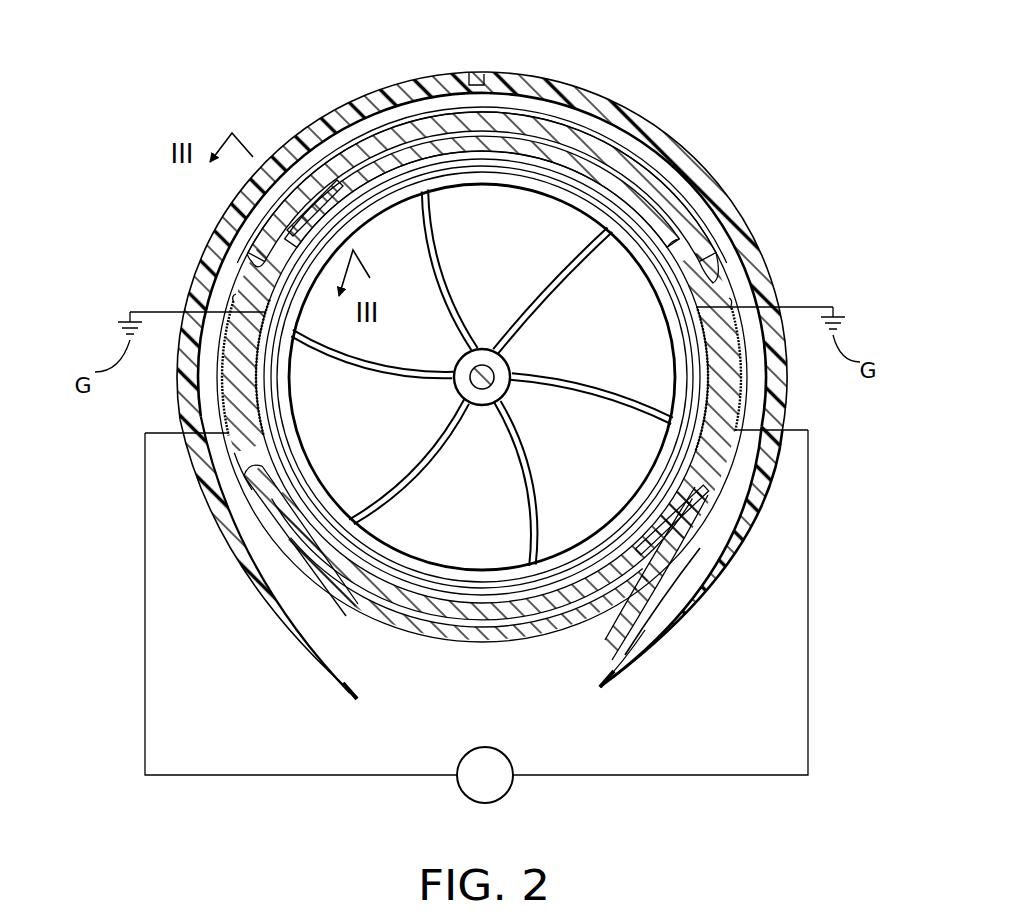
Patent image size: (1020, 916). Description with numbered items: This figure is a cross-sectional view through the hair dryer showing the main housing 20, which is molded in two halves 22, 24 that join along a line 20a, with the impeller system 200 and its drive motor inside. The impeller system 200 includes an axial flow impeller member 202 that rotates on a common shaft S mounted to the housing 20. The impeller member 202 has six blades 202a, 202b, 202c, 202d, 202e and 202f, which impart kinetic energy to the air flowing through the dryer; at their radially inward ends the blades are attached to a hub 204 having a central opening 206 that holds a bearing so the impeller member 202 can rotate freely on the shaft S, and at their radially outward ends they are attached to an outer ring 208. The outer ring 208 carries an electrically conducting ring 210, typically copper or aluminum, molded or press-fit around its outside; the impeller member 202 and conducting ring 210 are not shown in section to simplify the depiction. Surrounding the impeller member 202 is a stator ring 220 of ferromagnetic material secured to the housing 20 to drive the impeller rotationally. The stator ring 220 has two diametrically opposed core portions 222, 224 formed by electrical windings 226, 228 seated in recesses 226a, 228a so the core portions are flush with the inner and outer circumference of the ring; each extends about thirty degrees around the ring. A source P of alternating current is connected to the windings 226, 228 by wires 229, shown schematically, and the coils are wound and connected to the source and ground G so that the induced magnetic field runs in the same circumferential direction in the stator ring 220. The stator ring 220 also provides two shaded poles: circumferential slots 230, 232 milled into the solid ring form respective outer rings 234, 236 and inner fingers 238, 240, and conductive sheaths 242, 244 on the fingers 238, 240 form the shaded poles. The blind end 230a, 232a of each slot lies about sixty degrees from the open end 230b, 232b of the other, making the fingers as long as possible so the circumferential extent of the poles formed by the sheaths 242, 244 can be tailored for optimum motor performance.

The main housing 20 is at (649, 94).
The line 20a is at (482, 85).
The housing half 22 is at (386, 100).
The housing half 24 is at (703, 161).
The impeller system 200 is at (752, 259).
The axial flow impeller member 202 is at (516, 165).
The blade 202a is at (483, 247).
The blade 202b is at (573, 332).
The blade 202c is at (563, 457).
The blade 202d is at (448, 509).
The blade 202e is at (337, 432).
The blade 202f is at (399, 344).
The hub 204 is at (504, 364).
The central opening 206 is at (485, 349).
The outer ring 208 is at (420, 570).
The electrically conducting ring 210 is at (452, 587).
The stator ring 220 is at (243, 453).
The core portion 222 is at (230, 375).
The core portion 224 is at (730, 390).
The electrical winding 226 is at (220, 398).
The recess 226a is at (213, 302).
The electrical winding 228 is at (747, 400).
The recess 228a is at (737, 303).
The wires 229 is at (145, 680).
The circumferential slot 230 is at (432, 135).
The blind end 230a is at (713, 272).
The open end 230b is at (262, 250).
The circumferential slot 232 is at (527, 623).
The blind end 232a is at (250, 467).
The open end 232b is at (770, 470).
The outer ring 234 is at (633, 163).
The outer ring 236 is at (585, 622).
The inner finger 238 is at (672, 236).
The inner finger 240 is at (633, 620).
The conductive sheath 242 is at (300, 225).
The conductive sheath 244 is at (713, 567).